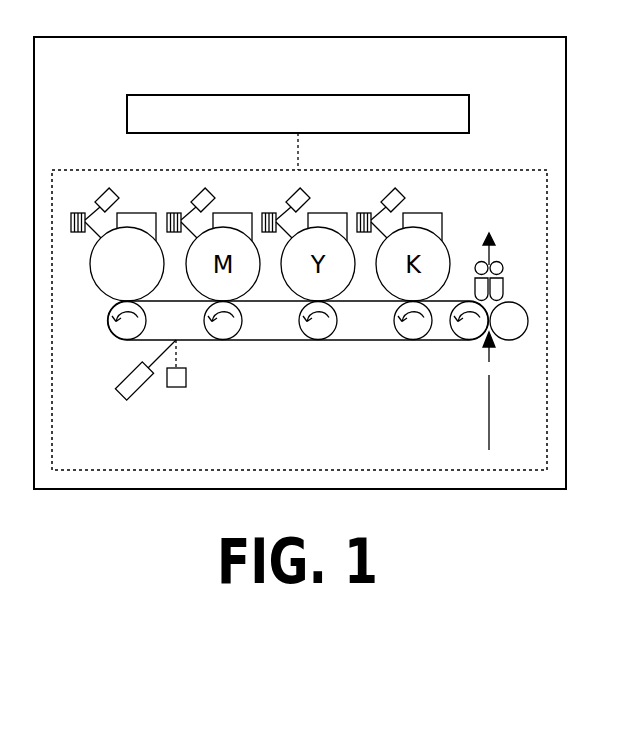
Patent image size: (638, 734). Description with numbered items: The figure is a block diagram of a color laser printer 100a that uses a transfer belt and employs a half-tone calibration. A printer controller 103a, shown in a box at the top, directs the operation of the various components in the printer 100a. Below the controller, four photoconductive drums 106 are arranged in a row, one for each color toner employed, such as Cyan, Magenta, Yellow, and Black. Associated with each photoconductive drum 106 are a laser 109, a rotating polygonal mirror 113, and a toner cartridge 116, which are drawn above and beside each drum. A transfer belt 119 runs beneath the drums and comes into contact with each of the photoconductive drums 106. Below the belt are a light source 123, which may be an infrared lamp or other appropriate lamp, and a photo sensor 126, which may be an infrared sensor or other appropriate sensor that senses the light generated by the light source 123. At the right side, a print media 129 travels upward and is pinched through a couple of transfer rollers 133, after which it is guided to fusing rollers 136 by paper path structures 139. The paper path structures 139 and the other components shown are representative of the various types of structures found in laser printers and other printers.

The laser printer 100a is at (300, 263).
The printer controller 103a is at (298, 132).
The photoconductive drum 106 is at (100, 287).
The laser 109 is at (119, 196).
The rotating polygonal mirror 113 is at (362, 213).
The toner cartridge 116 is at (230, 213).
The transfer belt 119 is at (283, 341).
The light source 123 is at (141, 390).
The photo sensor 126 is at (187, 378).
The print media 129 is at (489, 415).
The transfer rollers 133 is at (464, 338).
The fusing rollers 136 is at (477, 262).
The paper path structures 139 is at (502, 298).